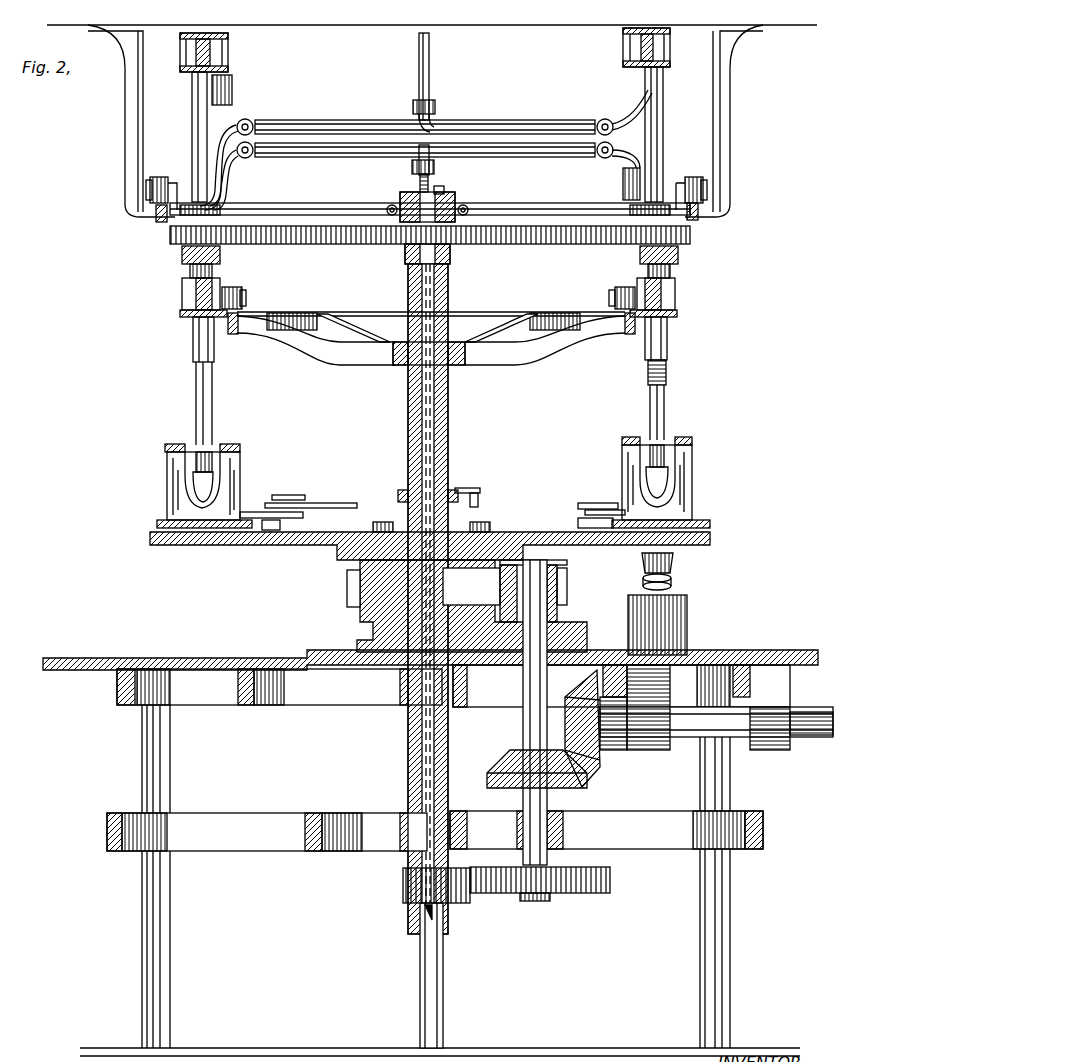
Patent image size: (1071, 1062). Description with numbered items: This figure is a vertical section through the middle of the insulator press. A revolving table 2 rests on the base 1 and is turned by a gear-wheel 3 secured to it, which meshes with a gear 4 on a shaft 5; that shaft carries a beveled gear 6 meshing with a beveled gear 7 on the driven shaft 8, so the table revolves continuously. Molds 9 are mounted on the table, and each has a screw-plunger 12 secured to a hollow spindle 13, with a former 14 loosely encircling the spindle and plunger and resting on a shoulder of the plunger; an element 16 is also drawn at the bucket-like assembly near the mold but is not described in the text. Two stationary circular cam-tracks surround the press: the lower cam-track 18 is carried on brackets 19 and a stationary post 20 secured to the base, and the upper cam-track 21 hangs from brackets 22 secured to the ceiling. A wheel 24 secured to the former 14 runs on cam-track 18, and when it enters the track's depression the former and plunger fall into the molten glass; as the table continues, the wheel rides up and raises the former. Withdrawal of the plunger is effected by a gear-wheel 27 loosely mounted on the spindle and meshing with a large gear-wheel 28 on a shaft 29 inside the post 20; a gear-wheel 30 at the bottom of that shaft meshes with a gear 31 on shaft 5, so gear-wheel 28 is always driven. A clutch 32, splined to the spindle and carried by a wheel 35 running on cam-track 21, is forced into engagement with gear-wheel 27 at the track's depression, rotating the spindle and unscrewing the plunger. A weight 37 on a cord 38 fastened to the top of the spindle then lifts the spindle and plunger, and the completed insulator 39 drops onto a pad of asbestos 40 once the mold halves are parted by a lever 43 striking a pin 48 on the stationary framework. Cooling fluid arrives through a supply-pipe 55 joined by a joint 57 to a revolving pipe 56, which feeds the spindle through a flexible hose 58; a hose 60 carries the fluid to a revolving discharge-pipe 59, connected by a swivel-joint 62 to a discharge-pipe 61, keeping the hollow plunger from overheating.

The base 1 is at (225, 656).
The revolving table 2 is at (296, 545).
The gear-wheel 3 is at (356, 588).
The gear 4 is at (567, 585).
The shaft 5 is at (523, 716).
The beveled gear 6 is at (510, 760).
The beveled gear 7 is at (600, 752).
The shaft 8 is at (805, 737).
The mold 9 is at (167, 488).
The screw-plunger 12 is at (215, 490).
The spindle 13 is at (663, 147).
The former 14 is at (193, 350).
The bucket rim 16 is at (185, 444).
The cam-track 18 is at (234, 334).
The bracket 19 is at (356, 365).
The stationary post 20 is at (408, 392).
The cam-track 21 is at (552, 203).
The bracket 22 is at (125, 165).
The wheel 24 is at (238, 288).
The gear-wheel 27 is at (185, 264).
The large gear-wheel 28 is at (372, 244).
The shaft 29 is at (408, 762).
The gear-wheel 30 is at (403, 890).
The gear 31 is at (610, 880).
The clutch 32 is at (166, 222).
The wheel 35 is at (163, 177).
The weight 37 is at (232, 80).
The cord 38 is at (192, 125).
The insulator 39 is at (675, 570).
The pad of asbestos 40 is at (687, 633).
The lever 43 is at (332, 500).
The pin 48 is at (480, 495).
The supply-pipe 55 is at (429, 70).
The revolving pipe 56 is at (360, 120).
The joint 57 is at (435, 108).
The flexible hose 58 is at (233, 138).
The revolving discharge-pipe 59 is at (350, 157).
The hose 60 is at (230, 178).
The discharge-pipe 61 is at (441, 190).
The swivel-joint 62 is at (412, 170).